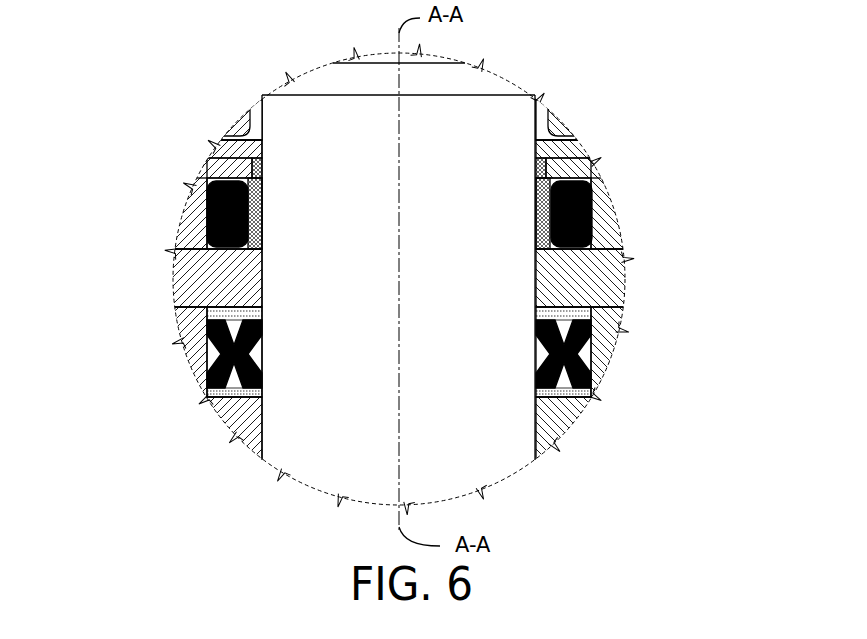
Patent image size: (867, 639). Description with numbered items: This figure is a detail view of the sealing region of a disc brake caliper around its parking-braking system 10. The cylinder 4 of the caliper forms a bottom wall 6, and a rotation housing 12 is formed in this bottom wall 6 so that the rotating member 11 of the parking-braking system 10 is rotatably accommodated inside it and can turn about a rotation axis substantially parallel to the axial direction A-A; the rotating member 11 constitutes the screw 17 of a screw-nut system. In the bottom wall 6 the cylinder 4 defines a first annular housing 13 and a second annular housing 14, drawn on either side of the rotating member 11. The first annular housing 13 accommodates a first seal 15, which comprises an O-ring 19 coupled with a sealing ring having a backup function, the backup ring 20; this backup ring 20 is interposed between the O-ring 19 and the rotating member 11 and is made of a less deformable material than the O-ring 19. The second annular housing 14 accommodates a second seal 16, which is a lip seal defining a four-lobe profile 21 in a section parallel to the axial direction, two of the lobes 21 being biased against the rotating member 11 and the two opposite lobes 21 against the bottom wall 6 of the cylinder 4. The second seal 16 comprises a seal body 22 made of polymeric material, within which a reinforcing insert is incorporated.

The cylinder 4 is at (222, 268).
The bottom wall 6 is at (562, 284).
The parking-braking system 10 is at (276, 56).
The rotating member 11 is at (445, 314).
The rotation housing 12 is at (448, 311).
The first annular housing 13 is at (205, 183).
The second annular housing 14 is at (566, 313).
The first seal 15 is at (240, 250).
The second seal 16 is at (212, 368).
The screw 17 is at (462, 444).
The O-ring 19 is at (593, 224).
The backup ring 20 is at (587, 187).
The four-lobe profile 21 is at (212, 322).
The seal body 22 is at (594, 378).